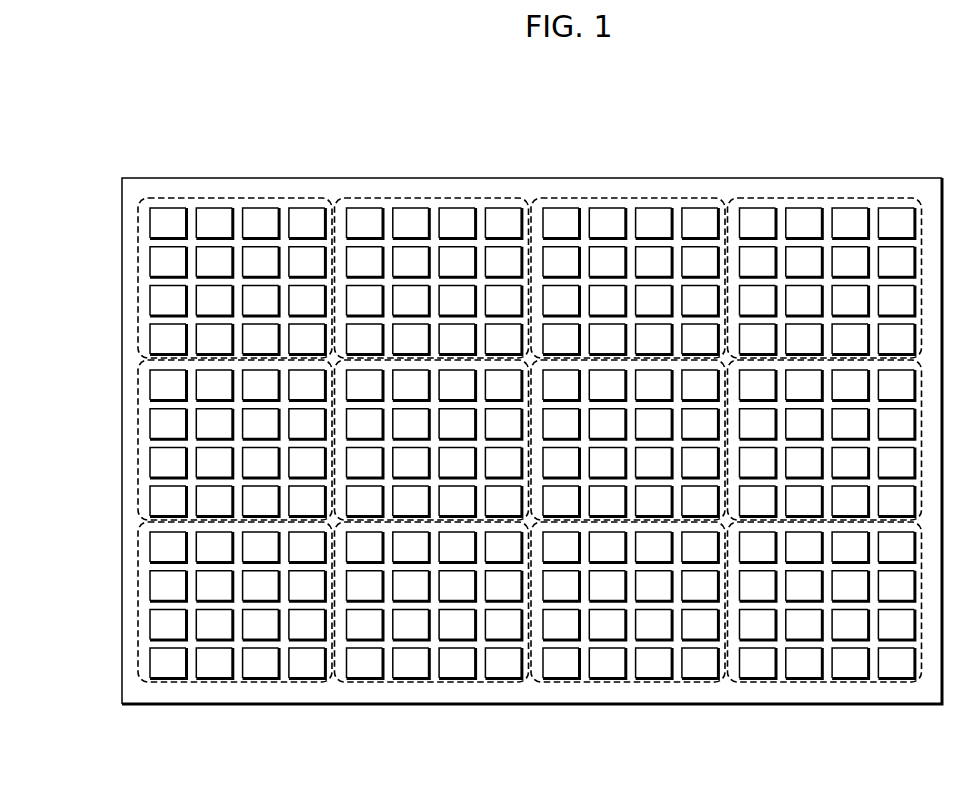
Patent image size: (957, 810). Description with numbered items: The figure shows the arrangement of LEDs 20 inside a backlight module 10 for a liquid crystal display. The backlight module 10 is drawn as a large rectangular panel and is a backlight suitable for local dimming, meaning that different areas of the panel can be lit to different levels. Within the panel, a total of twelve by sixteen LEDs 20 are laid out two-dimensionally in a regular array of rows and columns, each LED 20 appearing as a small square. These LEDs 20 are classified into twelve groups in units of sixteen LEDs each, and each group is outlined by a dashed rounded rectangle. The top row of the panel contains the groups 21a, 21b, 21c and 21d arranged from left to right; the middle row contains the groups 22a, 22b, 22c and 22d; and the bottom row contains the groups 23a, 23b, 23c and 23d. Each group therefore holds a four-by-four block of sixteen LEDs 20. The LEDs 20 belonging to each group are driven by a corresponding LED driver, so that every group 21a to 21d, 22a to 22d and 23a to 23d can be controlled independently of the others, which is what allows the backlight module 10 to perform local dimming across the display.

The backlight module 10 is at (872, 178).
The LED 20 is at (165, 224).
The group 21a is at (204, 249).
The group 21b is at (435, 206).
The group 21c is at (628, 206).
The group 21d is at (826, 206).
The group 22a is at (148, 440).
The group 22b is at (390, 513).
The group 22c is at (587, 513).
The group 22d is at (783, 513).
The group 23a is at (148, 603).
The group 23b is at (479, 677).
The group 23c is at (676, 677).
The group 23d is at (873, 677).